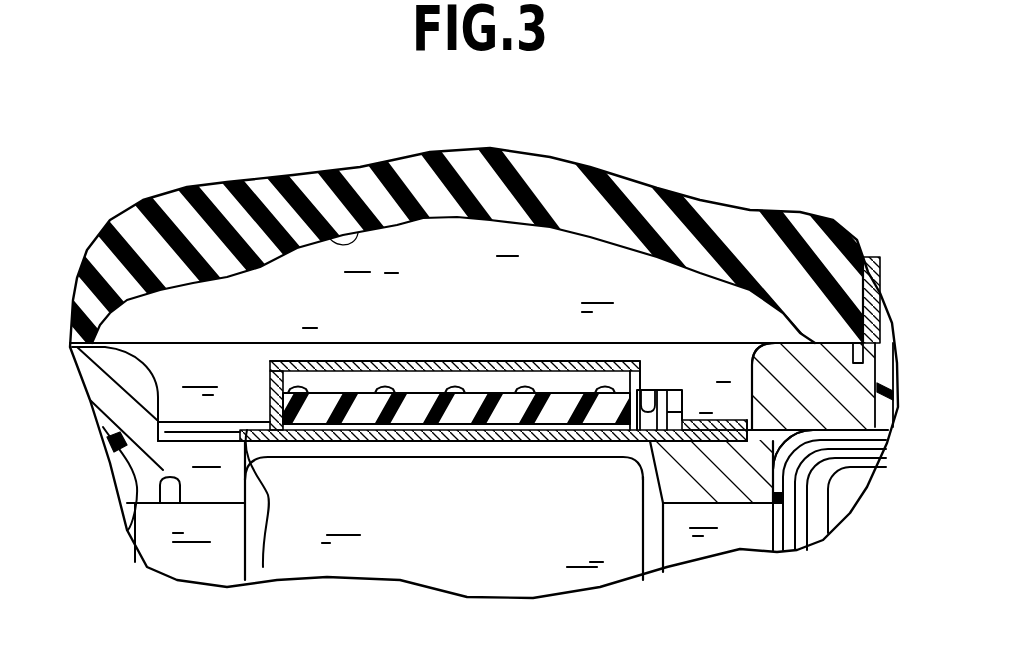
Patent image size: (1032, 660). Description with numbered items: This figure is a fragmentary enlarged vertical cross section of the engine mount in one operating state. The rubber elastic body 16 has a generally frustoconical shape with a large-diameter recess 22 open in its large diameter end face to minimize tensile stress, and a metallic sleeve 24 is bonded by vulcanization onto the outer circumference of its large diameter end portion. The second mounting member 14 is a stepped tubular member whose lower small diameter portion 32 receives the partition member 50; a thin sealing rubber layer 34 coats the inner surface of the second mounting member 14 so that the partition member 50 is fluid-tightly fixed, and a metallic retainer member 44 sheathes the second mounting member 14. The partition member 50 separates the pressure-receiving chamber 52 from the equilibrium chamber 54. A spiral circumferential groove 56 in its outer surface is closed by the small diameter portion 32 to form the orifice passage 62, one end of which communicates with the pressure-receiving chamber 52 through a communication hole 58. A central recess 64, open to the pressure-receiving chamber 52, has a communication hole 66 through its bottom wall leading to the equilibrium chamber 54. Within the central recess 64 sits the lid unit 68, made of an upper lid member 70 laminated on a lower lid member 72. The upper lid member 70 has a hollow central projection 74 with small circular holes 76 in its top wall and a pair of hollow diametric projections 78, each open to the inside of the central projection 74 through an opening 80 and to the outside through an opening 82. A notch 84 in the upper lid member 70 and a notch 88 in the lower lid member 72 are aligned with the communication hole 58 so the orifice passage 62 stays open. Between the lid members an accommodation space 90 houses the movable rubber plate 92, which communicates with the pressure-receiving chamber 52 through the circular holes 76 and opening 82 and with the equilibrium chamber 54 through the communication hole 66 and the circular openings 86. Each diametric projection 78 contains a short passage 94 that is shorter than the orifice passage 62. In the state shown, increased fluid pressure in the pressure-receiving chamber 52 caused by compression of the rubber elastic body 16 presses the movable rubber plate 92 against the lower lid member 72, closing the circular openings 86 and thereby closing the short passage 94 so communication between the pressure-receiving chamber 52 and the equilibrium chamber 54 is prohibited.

The second mounting member 14 is at (800, 507).
The small diameter portion 32 is at (829, 490).
The rubber elastic body 16 is at (752, 243).
The large-diameter recess 22 is at (327, 232).
The metallic sleeve 24 is at (873, 293).
The sealing rubber layer 34 is at (127, 505).
The retainer member 44 is at (823, 486).
The partition member 50 is at (657, 560).
The pressure-receiving chamber 52 is at (613, 270).
The equilibrium chamber 54 is at (510, 570).
The circumferential groove 56 is at (247, 553).
The communication hole 58 is at (128, 530).
The orifice passage 62 is at (740, 540).
The central recess 64 is at (742, 375).
The communication hole 66 is at (300, 447).
The lid unit 68 is at (538, 321).
The upper lid member 70 is at (601, 342).
The lower lid member 72 is at (503, 441).
The central projection 74 is at (272, 378).
The small circular holes 76 is at (440, 363).
The diametric projection 78 is at (690, 418).
The opening 80 is at (650, 398).
The opening 82 is at (672, 400).
The notch 84 is at (262, 430).
The circular openings 86 is at (442, 441).
The notch 88 is at (262, 480).
The accommodation space 90 is at (400, 383).
The movable rubber plate 92 is at (493, 407).
The short passage 94 is at (703, 378).